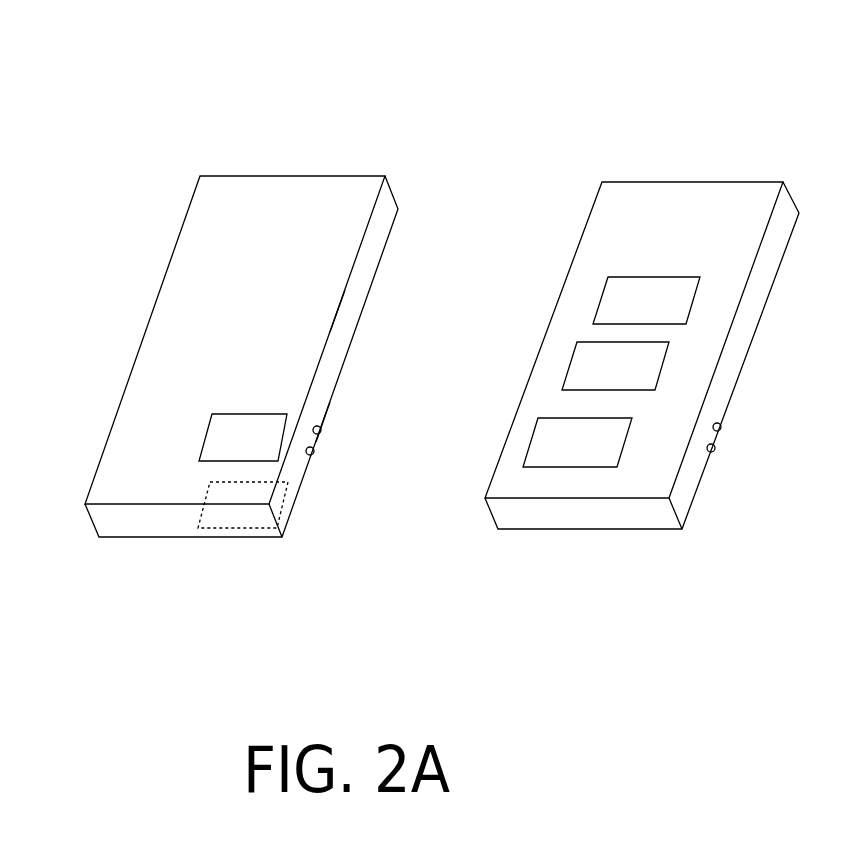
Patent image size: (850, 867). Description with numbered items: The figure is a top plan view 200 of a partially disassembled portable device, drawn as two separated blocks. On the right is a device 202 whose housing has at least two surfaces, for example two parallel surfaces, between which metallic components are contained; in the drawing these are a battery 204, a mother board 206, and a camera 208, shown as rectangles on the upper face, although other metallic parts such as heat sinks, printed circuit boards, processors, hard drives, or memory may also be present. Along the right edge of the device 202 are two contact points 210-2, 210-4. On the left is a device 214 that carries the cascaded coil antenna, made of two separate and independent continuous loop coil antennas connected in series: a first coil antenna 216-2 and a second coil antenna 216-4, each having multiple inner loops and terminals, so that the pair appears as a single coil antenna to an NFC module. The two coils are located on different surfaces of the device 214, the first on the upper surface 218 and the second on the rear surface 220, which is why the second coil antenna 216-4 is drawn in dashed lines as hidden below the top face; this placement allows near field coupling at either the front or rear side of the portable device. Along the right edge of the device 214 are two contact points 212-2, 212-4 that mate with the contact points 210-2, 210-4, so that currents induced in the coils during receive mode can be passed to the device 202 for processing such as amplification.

The top plan view 200 is at (790, 102).
The device 202 is at (617, 182).
The battery 204 is at (603, 292).
The mother board 206 is at (573, 355).
The camera 208 is at (548, 418).
The contact point 210-2 is at (721, 425).
The contact point 210-4 is at (715, 452).
The contact point 212-2 is at (321, 428).
The contact point 212-4 is at (314, 454).
The device 214 is at (337, 176).
The first coil antenna 216-2 is at (205, 425).
The second coil antenna 216-4 is at (237, 531).
The upper surface 218 is at (324, 290).
The rear surface 220 is at (341, 401).